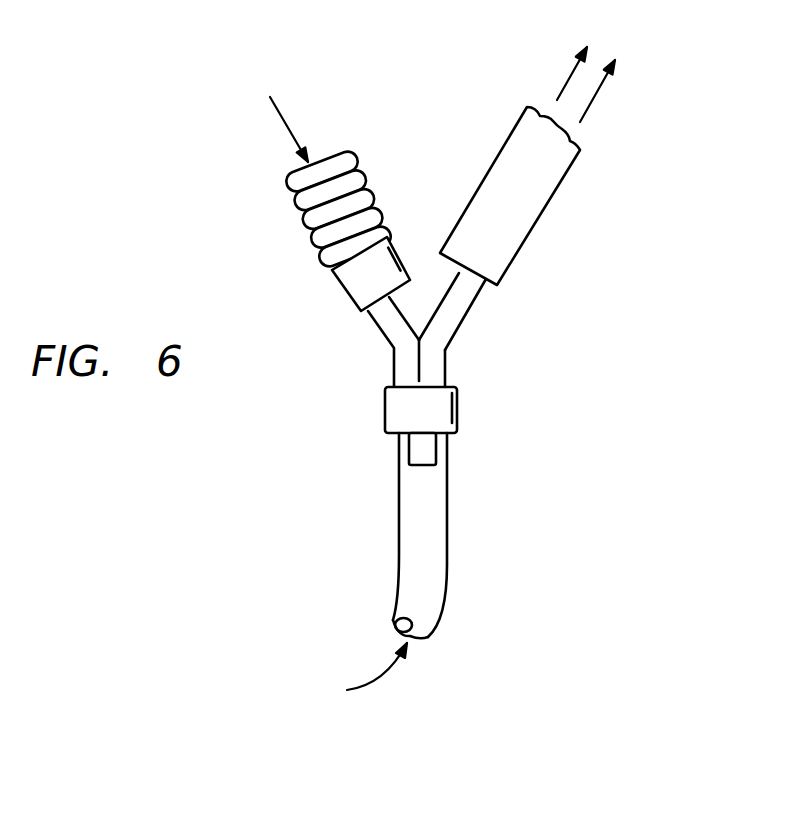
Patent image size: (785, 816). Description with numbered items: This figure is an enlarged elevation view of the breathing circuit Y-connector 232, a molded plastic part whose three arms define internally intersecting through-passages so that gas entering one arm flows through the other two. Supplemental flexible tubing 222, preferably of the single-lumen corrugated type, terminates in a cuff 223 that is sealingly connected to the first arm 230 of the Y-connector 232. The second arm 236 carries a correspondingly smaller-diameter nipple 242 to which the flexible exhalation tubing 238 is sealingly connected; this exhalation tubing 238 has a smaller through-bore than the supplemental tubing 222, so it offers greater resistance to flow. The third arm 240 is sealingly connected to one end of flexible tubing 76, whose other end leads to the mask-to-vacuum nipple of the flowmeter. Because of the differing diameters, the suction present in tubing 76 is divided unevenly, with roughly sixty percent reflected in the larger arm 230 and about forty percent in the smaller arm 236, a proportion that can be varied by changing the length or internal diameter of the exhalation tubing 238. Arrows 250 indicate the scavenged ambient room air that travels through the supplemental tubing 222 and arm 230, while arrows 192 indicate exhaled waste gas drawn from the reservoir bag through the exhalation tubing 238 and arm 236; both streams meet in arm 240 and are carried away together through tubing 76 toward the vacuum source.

The flexible tubing 76 is at (549, 200).
The arrows 192 is at (597, 97).
The supplemental flexible tubing 222 is at (293, 207).
The cuff 223 is at (350, 278).
The arm 230 is at (383, 328).
The Y-connector 232 is at (468, 338).
The second arm 236 is at (419, 366).
The exhalation tubing 238 is at (447, 538).
The third arm 240 is at (447, 298).
The nipple 242 is at (437, 450).
The arrows 250 is at (273, 124).